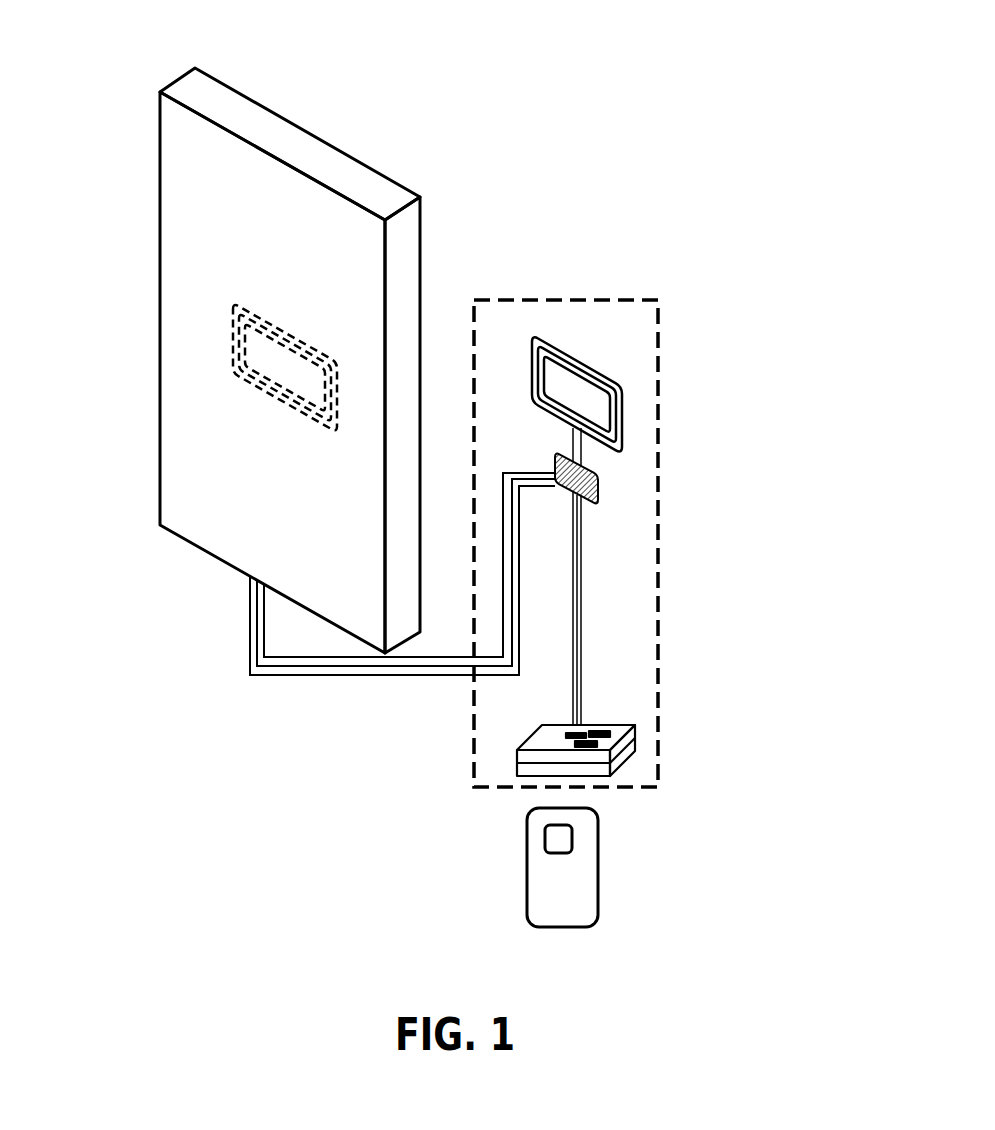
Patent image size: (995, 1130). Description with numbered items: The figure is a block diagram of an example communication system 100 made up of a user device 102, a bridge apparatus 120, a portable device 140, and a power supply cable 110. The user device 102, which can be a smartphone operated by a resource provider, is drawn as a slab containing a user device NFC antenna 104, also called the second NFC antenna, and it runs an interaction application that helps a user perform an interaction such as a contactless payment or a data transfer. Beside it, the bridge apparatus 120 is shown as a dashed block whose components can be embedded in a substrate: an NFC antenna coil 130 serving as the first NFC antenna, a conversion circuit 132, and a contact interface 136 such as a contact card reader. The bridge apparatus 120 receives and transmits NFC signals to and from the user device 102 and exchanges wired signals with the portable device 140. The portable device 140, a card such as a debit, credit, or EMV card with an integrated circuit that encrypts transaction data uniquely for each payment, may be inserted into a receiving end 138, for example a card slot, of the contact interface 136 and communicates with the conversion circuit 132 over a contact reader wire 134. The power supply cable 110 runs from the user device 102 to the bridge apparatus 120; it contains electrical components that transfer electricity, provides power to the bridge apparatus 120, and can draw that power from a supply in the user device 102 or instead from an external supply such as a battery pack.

The communication system 100 is at (733, 79).
The user device 102 is at (160, 167).
The user device NFC antenna 104 is at (233, 347).
The power supply cable 110 is at (277, 677).
The bridge apparatus 120 is at (617, 300).
The NFC antenna coil 130 is at (625, 408).
The conversion circuit 132 is at (600, 493).
The contact reader wire 134 is at (583, 603).
The contact interface 136 is at (612, 724).
The receiving end 138 is at (628, 758).
The portable device 140 is at (598, 925).